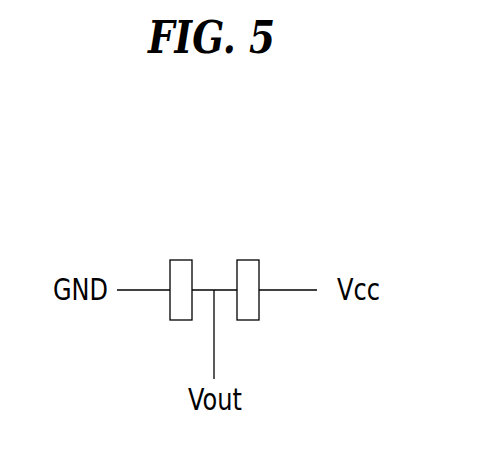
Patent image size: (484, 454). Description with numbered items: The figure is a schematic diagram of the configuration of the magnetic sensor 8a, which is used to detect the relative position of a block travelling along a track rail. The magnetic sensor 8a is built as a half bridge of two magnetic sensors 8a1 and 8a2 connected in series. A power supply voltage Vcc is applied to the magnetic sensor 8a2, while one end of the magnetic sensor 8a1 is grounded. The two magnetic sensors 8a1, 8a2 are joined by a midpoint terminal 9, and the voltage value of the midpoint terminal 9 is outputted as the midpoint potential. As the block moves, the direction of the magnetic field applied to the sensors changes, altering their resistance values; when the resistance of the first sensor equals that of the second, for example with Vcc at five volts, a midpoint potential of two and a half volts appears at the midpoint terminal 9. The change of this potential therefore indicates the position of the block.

The magnetic sensor 8a is at (278, 175).
The magnetic sensor 8a1 is at (181, 258).
The magnetic sensor 8a2 is at (249, 258).
The midpoint terminal 9 is at (214, 290).